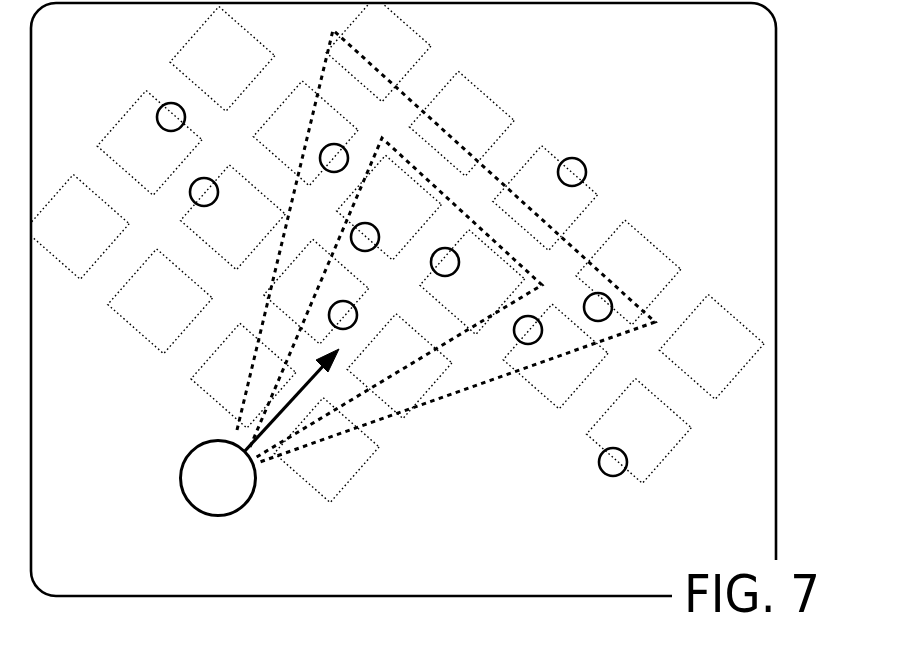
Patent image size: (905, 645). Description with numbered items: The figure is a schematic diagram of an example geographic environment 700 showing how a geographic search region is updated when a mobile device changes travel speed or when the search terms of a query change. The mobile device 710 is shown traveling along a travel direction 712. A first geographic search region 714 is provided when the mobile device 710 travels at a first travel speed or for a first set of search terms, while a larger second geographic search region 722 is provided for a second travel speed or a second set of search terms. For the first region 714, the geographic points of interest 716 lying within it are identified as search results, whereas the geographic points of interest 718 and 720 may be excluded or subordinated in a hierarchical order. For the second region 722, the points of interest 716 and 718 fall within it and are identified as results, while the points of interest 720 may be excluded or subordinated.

The geographic environment 700 is at (680, 67).
The mobile device 710 is at (201, 490).
The travel direction 712 is at (264, 443).
The first geographic search region 714 is at (378, 380).
The geographic points of interest 716 is at (444, 263).
The geographic points of interest 718 is at (529, 331).
The geographic points of interest 720 is at (202, 192).
The second geographic search region 722 is at (485, 384).